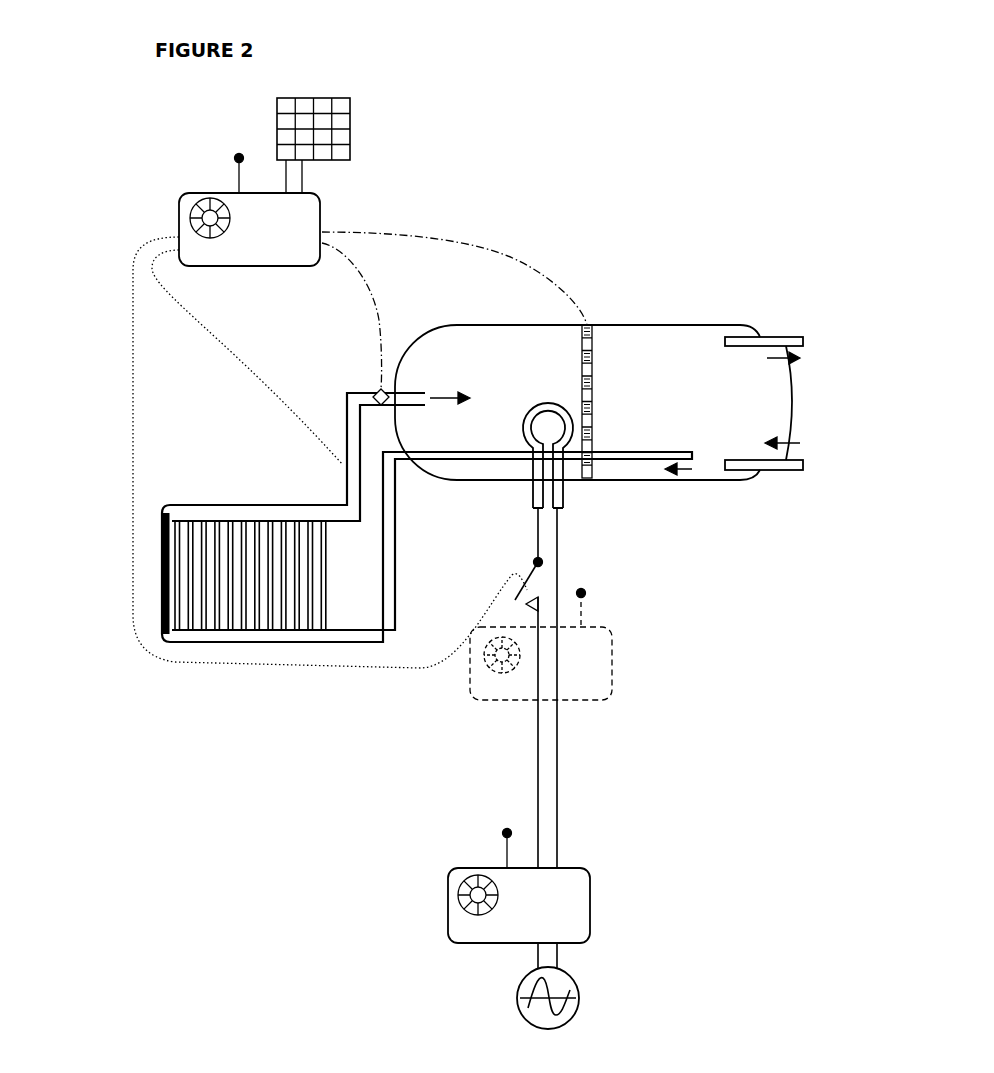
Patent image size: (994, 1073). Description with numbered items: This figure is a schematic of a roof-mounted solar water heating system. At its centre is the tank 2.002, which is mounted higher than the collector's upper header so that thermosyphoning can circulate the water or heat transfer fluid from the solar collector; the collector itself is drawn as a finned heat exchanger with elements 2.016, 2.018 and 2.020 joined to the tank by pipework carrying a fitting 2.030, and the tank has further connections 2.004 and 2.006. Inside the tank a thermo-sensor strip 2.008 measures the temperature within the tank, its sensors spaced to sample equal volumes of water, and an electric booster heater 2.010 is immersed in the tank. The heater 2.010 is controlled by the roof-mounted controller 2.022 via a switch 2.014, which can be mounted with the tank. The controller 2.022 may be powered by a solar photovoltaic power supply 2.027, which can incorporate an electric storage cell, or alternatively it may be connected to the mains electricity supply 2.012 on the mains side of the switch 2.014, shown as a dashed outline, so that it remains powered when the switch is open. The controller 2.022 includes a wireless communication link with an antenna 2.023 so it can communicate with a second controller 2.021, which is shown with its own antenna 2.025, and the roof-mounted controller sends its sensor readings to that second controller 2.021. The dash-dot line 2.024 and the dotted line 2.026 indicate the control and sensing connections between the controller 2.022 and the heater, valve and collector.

The tank 2.002 is at (490, 325).
The inlet pipe 2.004 is at (790, 335).
The outlet pipe 2.006 is at (790, 472).
The thermo-sensor strip 2.008 is at (580, 375).
The electric booster heater 2.010 is at (523, 415).
The mains electricity supply 2.012 is at (517, 1007).
The switch 2.014 is at (532, 570).
The heat exchanger tubes 2.016 is at (178, 602).
The heat exchanger outlet 2.018 is at (268, 635).
The heat exchanger inlet 2.020 is at (222, 576).
The second controller 2.021 is at (519, 905).
The controller 2.022 is at (249, 229).
The antenna 2.023 is at (233, 178).
The control line 2.024 is at (425, 237).
The antenna 2.025 is at (500, 853).
The sensor line 2.026 is at (133, 390).
The solar photovoltaic power supply 2.027 is at (350, 135).
The valve 2.030 is at (378, 393).